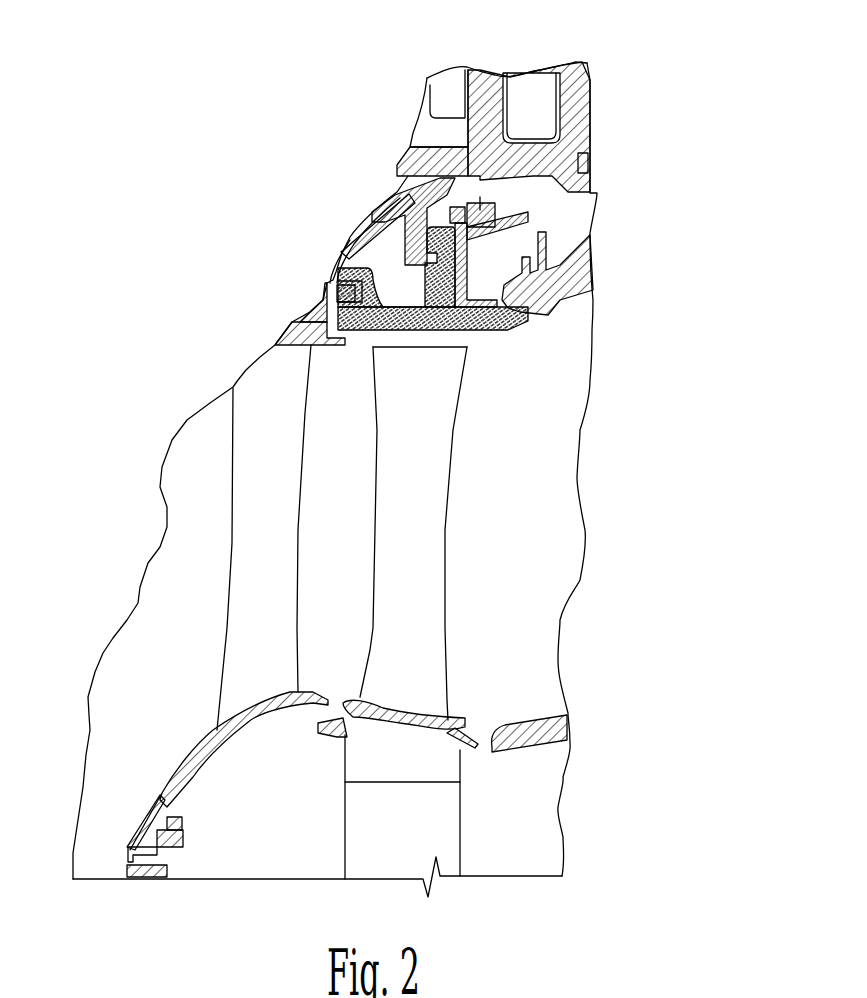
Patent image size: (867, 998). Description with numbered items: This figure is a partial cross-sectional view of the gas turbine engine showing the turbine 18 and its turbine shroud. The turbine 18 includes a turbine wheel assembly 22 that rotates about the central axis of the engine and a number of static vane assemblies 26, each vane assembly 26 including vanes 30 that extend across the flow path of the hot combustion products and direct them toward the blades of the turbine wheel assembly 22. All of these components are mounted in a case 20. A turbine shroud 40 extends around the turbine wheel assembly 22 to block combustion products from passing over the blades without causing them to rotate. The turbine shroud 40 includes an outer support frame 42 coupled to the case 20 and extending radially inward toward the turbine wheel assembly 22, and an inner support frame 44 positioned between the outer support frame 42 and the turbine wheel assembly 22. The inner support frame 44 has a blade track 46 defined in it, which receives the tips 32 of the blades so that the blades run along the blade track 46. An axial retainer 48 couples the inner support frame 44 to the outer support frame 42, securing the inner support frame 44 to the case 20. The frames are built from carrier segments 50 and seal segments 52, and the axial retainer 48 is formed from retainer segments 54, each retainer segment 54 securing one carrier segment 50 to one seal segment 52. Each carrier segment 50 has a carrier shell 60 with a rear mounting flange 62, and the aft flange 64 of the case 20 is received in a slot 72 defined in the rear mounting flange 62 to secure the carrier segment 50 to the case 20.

The turbine 18 is at (435, 498).
The case 20 is at (488, 95).
The turbine wheel assembly 22 is at (453, 813).
The vane assembly 26 is at (188, 767).
The vane 30 is at (240, 547).
The tip 32 is at (457, 355).
The turbine shroud 40 is at (427, 173).
The outer support frame 42 is at (388, 195).
The inner support frame 44 is at (508, 333).
The blade track 46 is at (357, 348).
The axial retainer 48 is at (467, 240).
The carrier segment 50 is at (360, 227).
The seal segment 52 is at (393, 313).
The retainer segment 54 is at (467, 283).
The carrier shell 60 is at (423, 168).
The rear mounting flange 62 is at (455, 170).
The aft flange 64 is at (480, 193).
The slot 72 is at (453, 172).